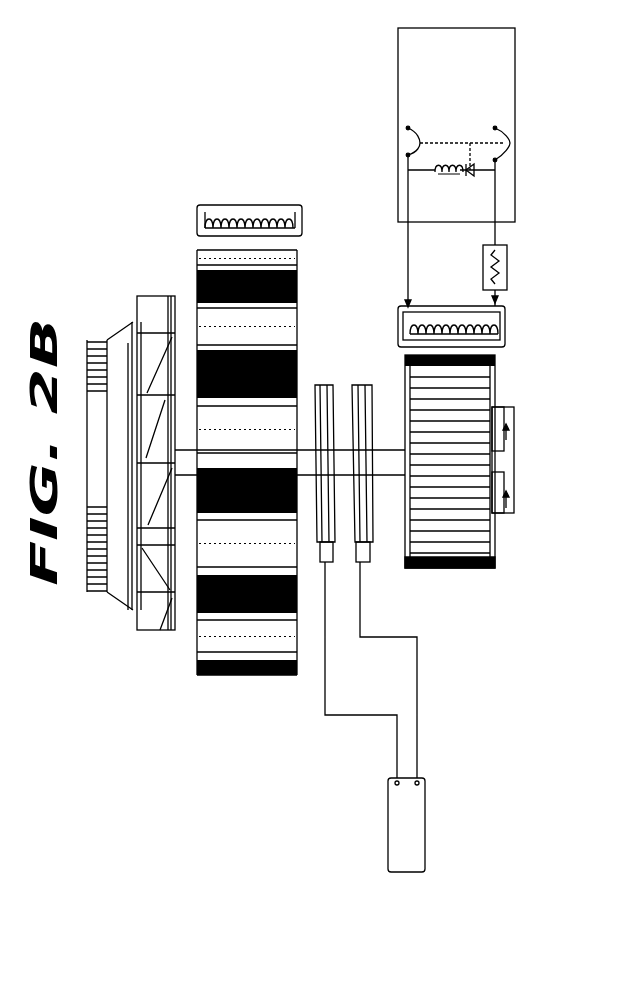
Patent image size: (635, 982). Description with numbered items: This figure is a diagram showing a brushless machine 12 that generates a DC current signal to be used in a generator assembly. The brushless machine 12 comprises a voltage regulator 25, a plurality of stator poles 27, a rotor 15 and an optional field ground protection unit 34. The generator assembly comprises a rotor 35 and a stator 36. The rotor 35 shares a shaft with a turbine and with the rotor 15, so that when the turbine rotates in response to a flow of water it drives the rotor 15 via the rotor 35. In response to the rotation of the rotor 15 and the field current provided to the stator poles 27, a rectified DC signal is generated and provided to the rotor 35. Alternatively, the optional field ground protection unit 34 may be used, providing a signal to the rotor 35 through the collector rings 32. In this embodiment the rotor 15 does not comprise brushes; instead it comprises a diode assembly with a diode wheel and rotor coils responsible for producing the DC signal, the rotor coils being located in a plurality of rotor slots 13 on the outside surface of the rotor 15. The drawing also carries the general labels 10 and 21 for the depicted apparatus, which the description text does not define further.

The fan 10 is at (155, 296).
The brushless machine 12 is at (405, 378).
The rotor slots 13 is at (447, 572).
The rotor 15 is at (487, 570).
The electric motor 21 is at (536, 652).
The voltage regulator 25 is at (515, 88).
The stator poles 27 is at (505, 323).
The collector rings 32 is at (385, 532).
The field ground protection unit 34 is at (388, 828).
The rotor 35 is at (245, 676).
The stator 36 is at (258, 205).